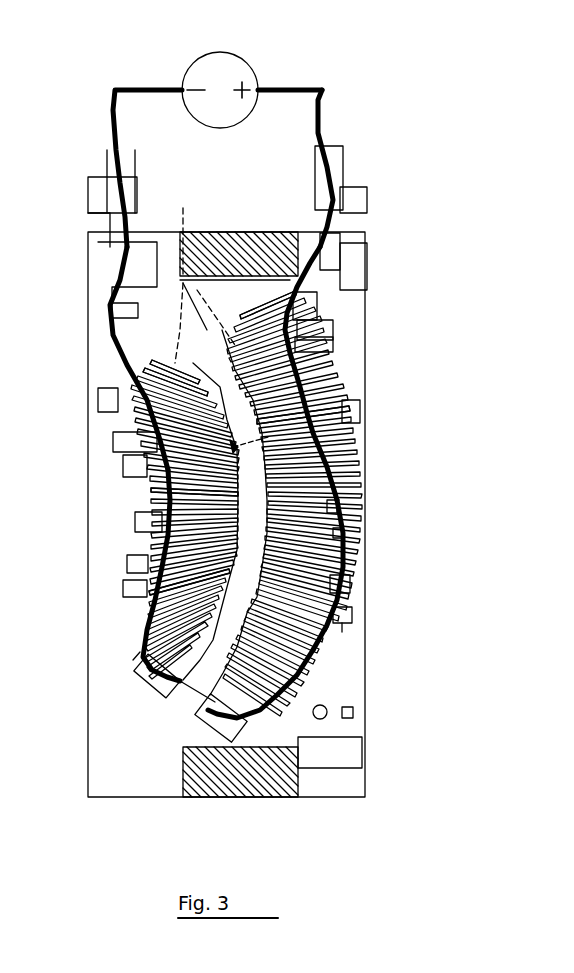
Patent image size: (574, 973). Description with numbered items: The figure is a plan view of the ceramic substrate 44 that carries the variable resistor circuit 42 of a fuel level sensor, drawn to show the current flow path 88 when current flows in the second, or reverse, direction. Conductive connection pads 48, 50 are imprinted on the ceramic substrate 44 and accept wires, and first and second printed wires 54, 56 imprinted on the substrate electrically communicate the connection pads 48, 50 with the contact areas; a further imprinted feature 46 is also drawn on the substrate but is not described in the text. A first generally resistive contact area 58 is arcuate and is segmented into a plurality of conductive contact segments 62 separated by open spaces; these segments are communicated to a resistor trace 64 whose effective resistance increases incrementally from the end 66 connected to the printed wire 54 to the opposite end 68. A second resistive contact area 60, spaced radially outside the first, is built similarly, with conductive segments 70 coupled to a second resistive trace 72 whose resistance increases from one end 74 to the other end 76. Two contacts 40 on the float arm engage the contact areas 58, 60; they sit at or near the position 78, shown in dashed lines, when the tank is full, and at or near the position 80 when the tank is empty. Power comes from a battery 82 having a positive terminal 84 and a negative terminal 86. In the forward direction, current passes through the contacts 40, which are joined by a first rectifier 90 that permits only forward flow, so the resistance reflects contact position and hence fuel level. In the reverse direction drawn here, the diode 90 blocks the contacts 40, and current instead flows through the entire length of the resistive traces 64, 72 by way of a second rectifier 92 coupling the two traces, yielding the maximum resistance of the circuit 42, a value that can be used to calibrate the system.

The contacts 40 is at (300, 425).
The variable resistor circuit 42 is at (349, 351).
The ceramic substrate 44 is at (365, 738).
The first conductor segment 46 is at (148, 385).
The connection pad 48 is at (107, 257).
The connection pad 50 is at (347, 270).
The first printed wire 54 is at (163, 359).
The second printed wire 56 is at (293, 300).
The first resistive contact area 58 is at (141, 682).
The second resistive contact area 60 is at (205, 737).
The conductive contact segments 62 is at (180, 588).
The resistor trace 64 is at (160, 548).
The end of first contact area 66 is at (122, 372).
The opposite end of first contact area 68 is at (140, 650).
The conductive segments 70 is at (292, 595).
The second resistive trace 72 is at (352, 520).
The end of second resistive trace 74 is at (246, 232).
The other end of second resistive trace 76 is at (350, 627).
The full-tank contact position 78 is at (184, 272).
The empty-tank contact position 80 is at (205, 735).
The battery 82 is at (233, 62).
The battery positive terminal 84 is at (258, 90).
The battery negative terminal 86 is at (182, 90).
The current path 88 is at (327, 135).
The first rectifier 90 is at (345, 488).
The second rectifier 92 is at (197, 692).